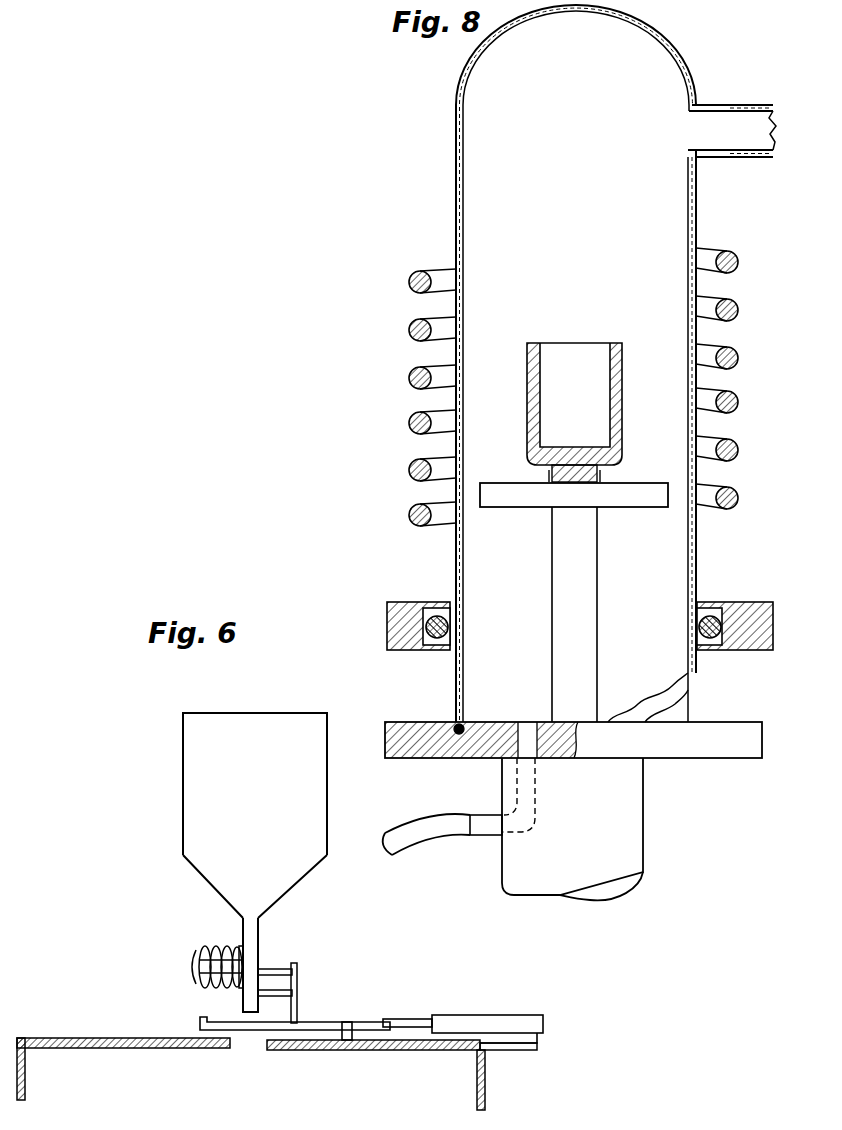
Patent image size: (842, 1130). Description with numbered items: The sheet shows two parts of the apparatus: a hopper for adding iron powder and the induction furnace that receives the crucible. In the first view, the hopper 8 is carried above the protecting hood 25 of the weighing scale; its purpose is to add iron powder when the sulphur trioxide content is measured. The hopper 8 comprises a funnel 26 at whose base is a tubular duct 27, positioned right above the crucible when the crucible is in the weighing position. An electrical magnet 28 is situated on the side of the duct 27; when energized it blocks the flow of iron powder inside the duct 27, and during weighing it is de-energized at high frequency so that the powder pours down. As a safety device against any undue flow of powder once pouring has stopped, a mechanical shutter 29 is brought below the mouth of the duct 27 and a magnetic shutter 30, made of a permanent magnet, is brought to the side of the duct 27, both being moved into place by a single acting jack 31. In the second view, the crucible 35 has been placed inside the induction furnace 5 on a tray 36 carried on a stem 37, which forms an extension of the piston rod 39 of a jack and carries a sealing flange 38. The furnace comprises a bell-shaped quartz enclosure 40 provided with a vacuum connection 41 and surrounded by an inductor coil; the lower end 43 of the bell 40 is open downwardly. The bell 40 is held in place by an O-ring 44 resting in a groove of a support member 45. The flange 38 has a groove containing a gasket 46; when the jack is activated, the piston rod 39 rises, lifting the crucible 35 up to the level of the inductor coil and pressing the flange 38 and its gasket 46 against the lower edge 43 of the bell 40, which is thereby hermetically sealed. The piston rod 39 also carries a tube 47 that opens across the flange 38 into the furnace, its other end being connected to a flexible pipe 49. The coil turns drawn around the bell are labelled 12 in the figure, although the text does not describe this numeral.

In FIG. 8, the bell-shaped quartz enclosure 40 is at (662, 46).
In FIG. 8, the vacuum connection 41 is at (742, 105).
In FIG. 8, the induction heating coil 12 is at (740, 316).
In FIG. 8, the induction furnace 5 is at (748, 408).
In FIG. 8, the crucible 35 is at (622, 372).
In FIG. 8, the tray 36 is at (640, 492).
In FIG. 8, the stem 37 is at (593, 580).
In FIG. 8, the O-ring 44 is at (712, 612).
In FIG. 8, the support member 45 is at (752, 606).
In FIG. 8, the sealing flange 38 is at (744, 732).
In FIG. 8, the gasket 46 is at (455, 726).
In FIG. 8, the lower end of the bell 43 is at (688, 708).
In FIG. 8, the piston rod 39 is at (640, 842).
In FIG. 8, the tube 47 is at (522, 783).
In FIG. 8, the flexible pipe 49 is at (460, 836).
In FIG. 6, the hopper 8 is at (183, 733).
In FIG. 6, the funnel 26 is at (200, 882).
In FIG. 6, the tubular duct 27 is at (262, 932).
In FIG. 6, the electrical magnet 28 is at (195, 958).
In FIG. 6, the magnetic shutter 30 is at (300, 975).
In FIG. 6, the mechanical shutter 29 is at (326, 1022).
In FIG. 6, the single acting jack 31 is at (450, 1014).
In FIG. 6, the protecting hood 25 is at (487, 1092).